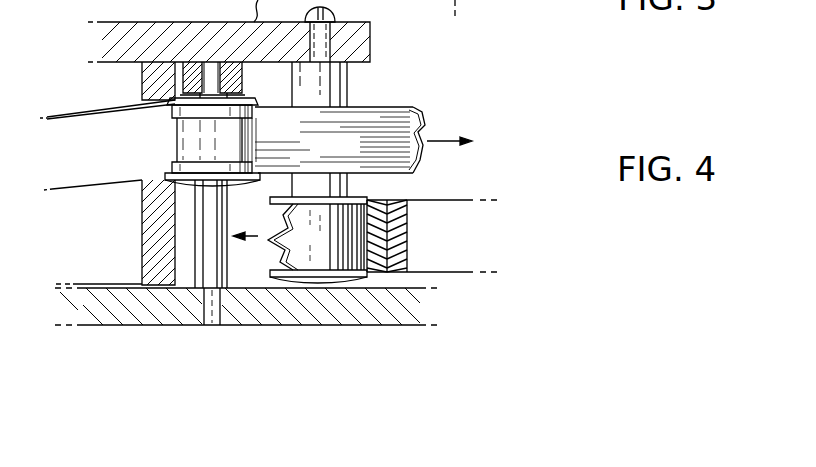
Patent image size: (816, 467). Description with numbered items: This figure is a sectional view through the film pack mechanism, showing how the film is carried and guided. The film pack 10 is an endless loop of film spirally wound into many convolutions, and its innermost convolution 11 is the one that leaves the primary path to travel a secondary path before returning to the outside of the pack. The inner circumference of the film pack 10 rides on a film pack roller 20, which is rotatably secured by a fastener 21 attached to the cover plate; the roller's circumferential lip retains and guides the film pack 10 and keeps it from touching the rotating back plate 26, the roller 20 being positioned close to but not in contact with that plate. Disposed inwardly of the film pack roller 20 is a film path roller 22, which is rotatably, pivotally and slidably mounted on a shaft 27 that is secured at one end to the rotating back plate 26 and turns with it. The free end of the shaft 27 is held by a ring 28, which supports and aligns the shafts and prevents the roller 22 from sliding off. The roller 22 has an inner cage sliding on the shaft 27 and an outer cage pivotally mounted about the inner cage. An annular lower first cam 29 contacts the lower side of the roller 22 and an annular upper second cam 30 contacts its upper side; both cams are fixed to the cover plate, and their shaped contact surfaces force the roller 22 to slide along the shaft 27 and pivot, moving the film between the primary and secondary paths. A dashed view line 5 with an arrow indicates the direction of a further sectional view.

In FIG. 3, the section line 5- 5 is at (455, 20).
In FIG. 4, the film pack 10 is at (459, 243).
In FIG. 4, the innermost convolution 11 is at (422, 116).
In FIG. 4, the film pack rollers 20 is at (355, 195).
In FIG. 4, the fasteners 21 is at (349, 80).
In FIG. 4, the film path rollers 22 is at (175, 128).
In FIG. 4, the rotating back plate 26 is at (298, 327).
In FIG. 4, the shafts 27 is at (213, 327).
In FIG. 4, the ring 28 is at (244, 78).
In FIG. 4, the lower first cam 29 is at (122, 180).
In FIG. 4, the upper second cam 30 is at (95, 117).